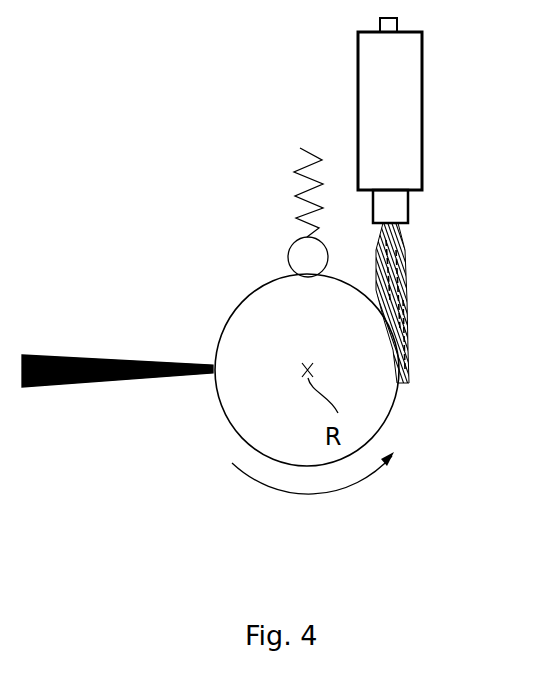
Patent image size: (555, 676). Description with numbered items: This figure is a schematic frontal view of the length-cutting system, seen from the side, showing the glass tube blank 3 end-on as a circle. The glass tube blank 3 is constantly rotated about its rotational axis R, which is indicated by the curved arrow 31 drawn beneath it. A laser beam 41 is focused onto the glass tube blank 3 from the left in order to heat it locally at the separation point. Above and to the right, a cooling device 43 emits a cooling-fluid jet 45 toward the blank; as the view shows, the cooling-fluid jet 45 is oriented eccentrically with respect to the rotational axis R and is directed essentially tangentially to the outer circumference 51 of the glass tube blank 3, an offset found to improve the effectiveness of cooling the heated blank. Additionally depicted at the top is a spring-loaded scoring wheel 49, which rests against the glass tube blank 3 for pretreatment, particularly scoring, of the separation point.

The glass tube blank 3 is at (282, 324).
The outer circumference 51 is at (252, 283).
The spring-loaded scoring wheel 49 is at (280, 228).
The cooling device 43 is at (423, 107).
The cooling-fluid jet 45 is at (400, 290).
The laser beam 41 is at (60, 387).
The curved arrow 31 is at (308, 502).